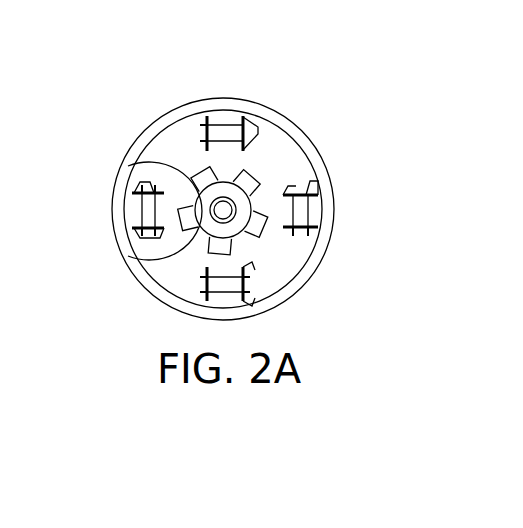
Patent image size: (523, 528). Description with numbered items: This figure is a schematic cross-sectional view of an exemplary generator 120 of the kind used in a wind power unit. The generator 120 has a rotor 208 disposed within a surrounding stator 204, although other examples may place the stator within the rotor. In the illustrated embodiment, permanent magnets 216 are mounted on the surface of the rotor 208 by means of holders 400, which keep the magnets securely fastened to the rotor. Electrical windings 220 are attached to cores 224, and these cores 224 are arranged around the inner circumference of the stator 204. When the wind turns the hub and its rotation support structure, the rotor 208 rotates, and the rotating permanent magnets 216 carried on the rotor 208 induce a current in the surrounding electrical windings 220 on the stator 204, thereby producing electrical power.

The generator 120 is at (338, 137).
The stator 204 is at (333, 175).
The rotor 208 is at (137, 249).
The permanent magnets 216 is at (102, 175).
The electrical windings 220 is at (250, 131).
The cores 224 is at (205, 120).
The holders 400 is at (135, 161).